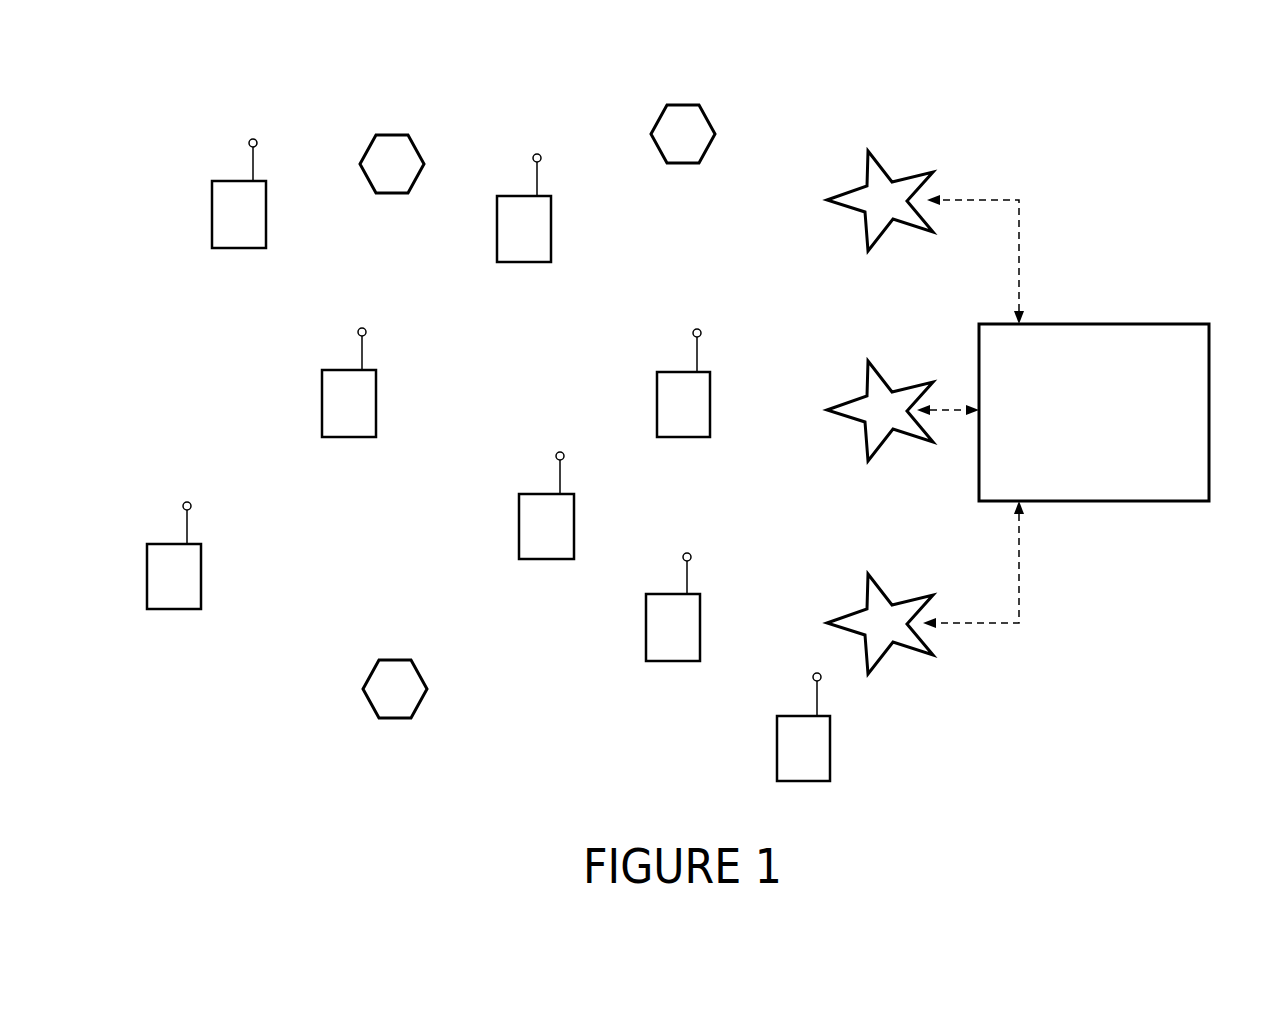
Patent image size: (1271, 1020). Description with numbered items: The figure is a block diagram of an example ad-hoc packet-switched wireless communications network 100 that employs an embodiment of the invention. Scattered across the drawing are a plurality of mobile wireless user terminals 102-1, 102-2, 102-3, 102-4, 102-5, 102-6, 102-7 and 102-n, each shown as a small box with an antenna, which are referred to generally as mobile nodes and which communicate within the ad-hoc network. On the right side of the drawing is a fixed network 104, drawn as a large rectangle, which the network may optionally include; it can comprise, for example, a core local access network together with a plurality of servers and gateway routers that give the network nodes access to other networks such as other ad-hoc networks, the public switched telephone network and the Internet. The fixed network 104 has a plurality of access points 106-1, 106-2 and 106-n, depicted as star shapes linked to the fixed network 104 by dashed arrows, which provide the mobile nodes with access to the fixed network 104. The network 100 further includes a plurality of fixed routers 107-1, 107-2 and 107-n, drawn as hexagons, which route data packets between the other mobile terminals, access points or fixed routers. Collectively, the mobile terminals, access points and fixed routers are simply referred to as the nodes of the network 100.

The ad-hoc packet-switched wireless communications network 100 is at (1057, 143).
The mobile wireless user terminal 102-1 is at (170, 609).
The mobile wireless user terminal 102-2 is at (345, 437).
The mobile wireless user terminal 102-3 is at (538, 559).
The mobile wireless user terminal 102-4 is at (663, 661).
The mobile wireless user terminal 102-5 is at (673, 437).
The mobile wireless user terminal 102-6 is at (240, 248).
The mobile wireless user terminal 102-7 is at (520, 262).
The mobile wireless user terminal 102-n is at (793, 781).
The fixed network 104 is at (1132, 501).
The access point 106-1 is at (893, 230).
The access point 106-2 is at (892, 440).
The access point 106-n is at (890, 655).
The fixed router 107-1 is at (388, 193).
The fixed router 107-2 is at (392, 718).
The fixed router 107-n is at (682, 162).